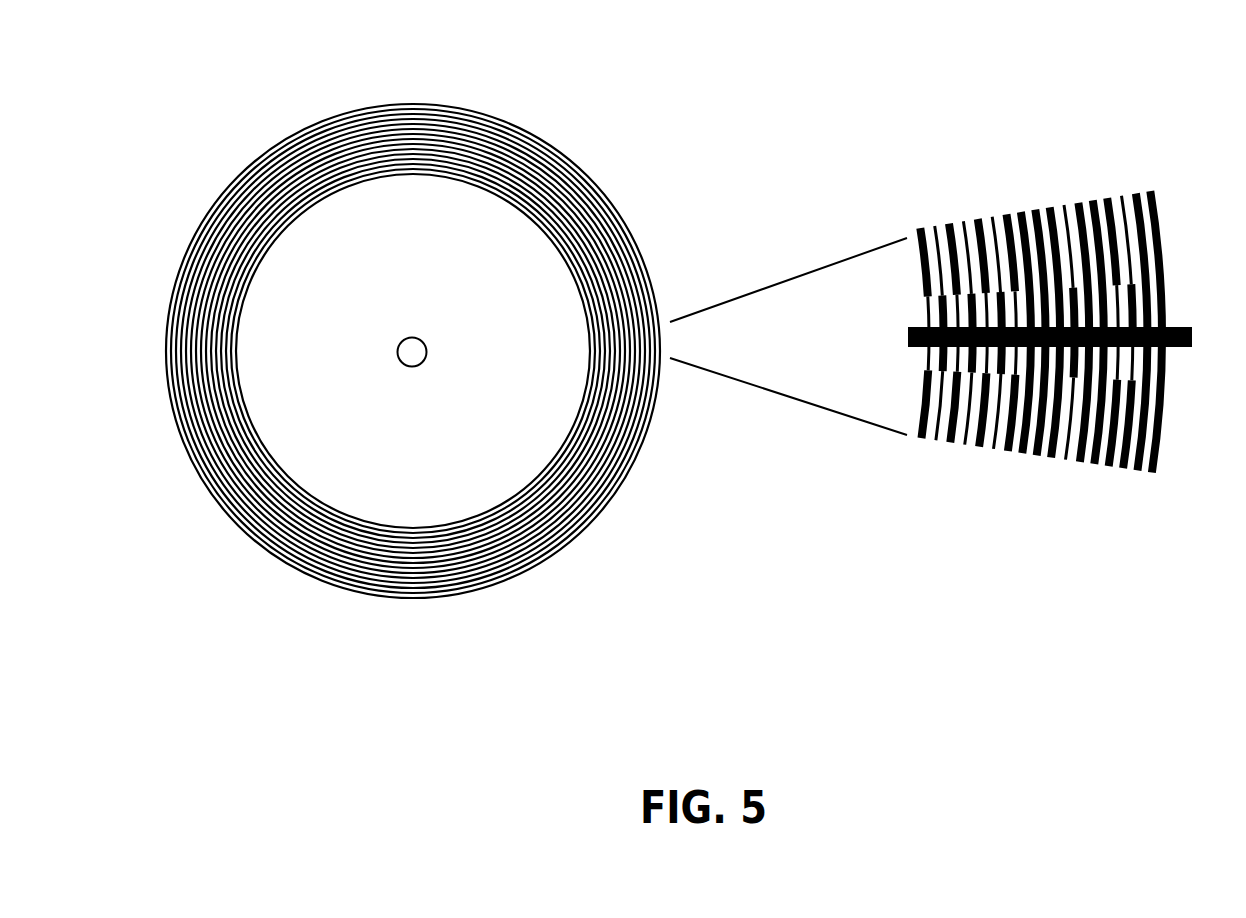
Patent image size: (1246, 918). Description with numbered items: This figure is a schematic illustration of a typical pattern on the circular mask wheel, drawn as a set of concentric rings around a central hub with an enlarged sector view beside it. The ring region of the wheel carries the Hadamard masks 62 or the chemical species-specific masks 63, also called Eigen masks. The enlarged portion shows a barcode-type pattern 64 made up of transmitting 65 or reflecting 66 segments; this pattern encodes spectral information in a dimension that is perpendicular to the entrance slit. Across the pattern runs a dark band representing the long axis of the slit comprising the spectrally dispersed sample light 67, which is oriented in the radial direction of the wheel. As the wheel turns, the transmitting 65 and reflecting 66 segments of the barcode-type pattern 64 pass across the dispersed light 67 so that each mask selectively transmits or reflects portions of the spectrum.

The Hadamard masks 62 is at (440, 351).
The chemical species-specific masks 63 is at (567, 158).
The barcode-type pattern 64 is at (1031, 260).
The transmitting segments 65 is at (1107, 199).
The reflecting segments 66 is at (1141, 295).
The spectrally dispersed sample light 67 is at (1183, 323).